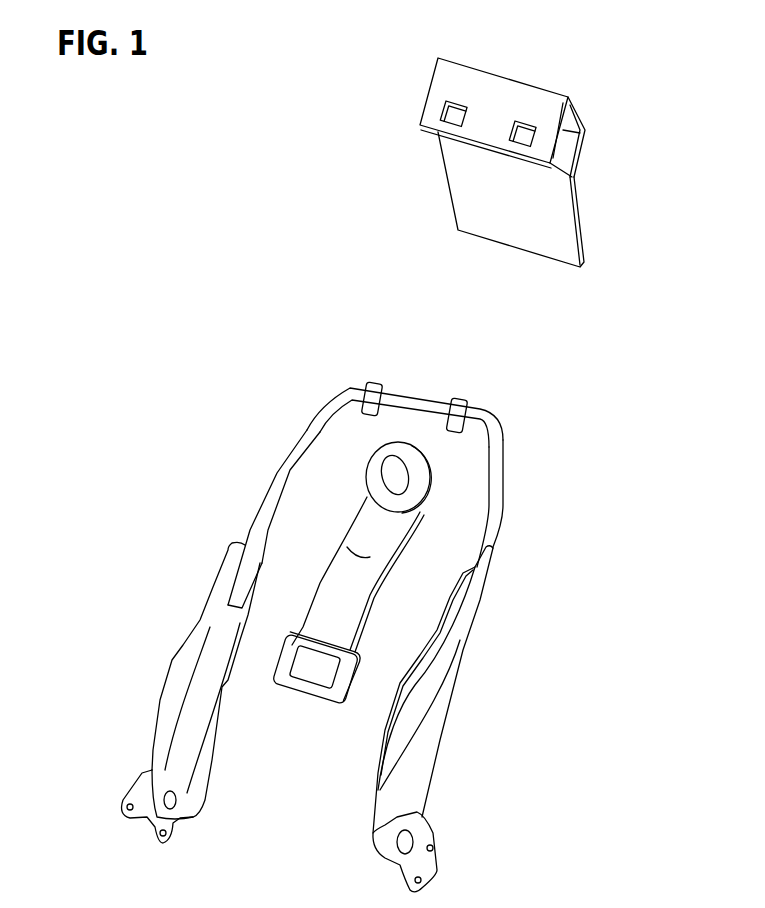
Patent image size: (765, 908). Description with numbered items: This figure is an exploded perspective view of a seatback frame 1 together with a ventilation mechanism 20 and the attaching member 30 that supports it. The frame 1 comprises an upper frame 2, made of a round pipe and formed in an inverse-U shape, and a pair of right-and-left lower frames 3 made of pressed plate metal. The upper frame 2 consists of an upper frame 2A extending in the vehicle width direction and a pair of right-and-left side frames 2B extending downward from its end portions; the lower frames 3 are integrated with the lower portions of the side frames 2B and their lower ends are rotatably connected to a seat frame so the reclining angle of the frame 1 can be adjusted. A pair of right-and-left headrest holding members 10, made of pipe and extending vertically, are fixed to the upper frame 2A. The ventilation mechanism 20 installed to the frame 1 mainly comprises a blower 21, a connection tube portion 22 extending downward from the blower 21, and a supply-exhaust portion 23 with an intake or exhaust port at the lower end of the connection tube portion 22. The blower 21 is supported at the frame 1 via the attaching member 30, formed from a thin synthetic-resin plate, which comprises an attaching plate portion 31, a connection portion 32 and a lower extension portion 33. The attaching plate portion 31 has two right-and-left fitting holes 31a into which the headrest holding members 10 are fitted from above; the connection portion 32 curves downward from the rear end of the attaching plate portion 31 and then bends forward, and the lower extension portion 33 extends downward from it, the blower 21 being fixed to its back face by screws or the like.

The frame 1 is at (340, 613).
The upper frame 2 is at (387, 470).
The upper frame 2A is at (410, 392).
The side frames 2B is at (277, 473).
The lower frames 3 is at (175, 702).
The headrest holding members 10 is at (360, 393).
The ventilation mechanism 20 is at (344, 642).
The blower 21 is at (377, 467).
The connection tube portion 22 is at (358, 670).
The supply-exhaust portion 23 is at (297, 688).
The attaching member 30 is at (506, 137).
The attaching plate portion 31 is at (460, 120).
The fitting holes 31a is at (440, 110).
The connection portion 32 is at (582, 121).
The lower extension portion 33 is at (580, 218).